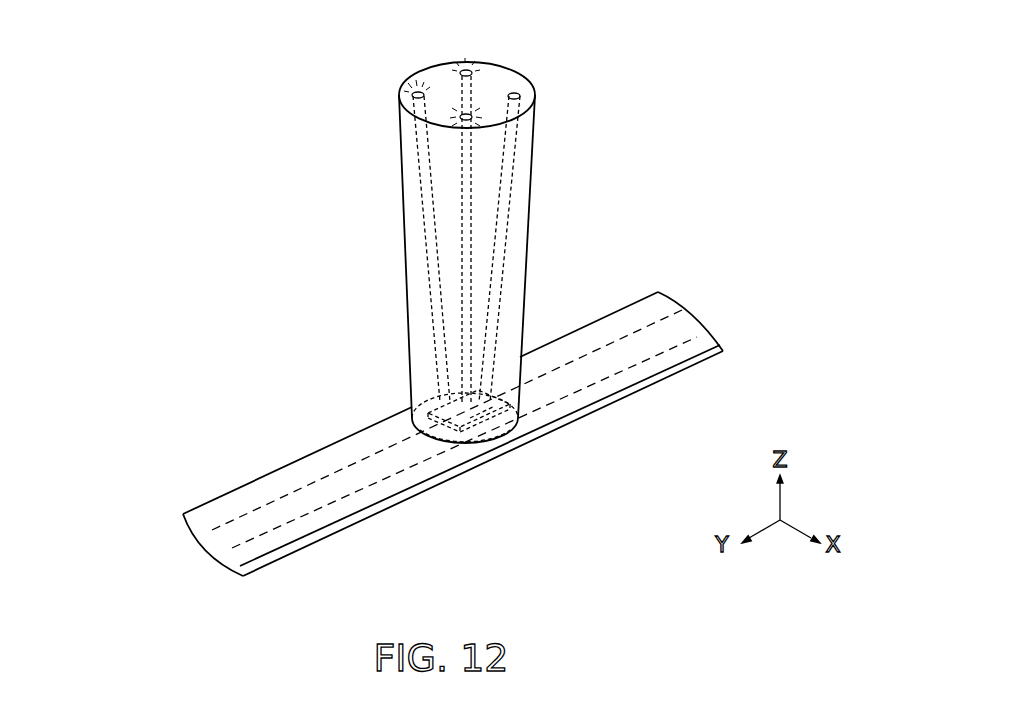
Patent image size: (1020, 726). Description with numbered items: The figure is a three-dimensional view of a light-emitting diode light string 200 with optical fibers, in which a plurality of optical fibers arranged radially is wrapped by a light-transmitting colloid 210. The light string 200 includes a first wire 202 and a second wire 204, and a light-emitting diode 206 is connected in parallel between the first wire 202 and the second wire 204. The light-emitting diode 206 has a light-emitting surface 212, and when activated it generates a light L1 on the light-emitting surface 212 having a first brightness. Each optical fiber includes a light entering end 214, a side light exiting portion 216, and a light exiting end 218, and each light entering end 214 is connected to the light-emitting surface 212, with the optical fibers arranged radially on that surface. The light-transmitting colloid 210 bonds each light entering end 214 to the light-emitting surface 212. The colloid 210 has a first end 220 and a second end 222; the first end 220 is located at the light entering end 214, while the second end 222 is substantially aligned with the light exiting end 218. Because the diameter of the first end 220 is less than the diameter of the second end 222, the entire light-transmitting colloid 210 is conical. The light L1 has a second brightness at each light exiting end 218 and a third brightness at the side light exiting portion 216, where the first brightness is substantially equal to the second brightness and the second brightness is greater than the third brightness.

The light-emitting diode light string 200 is at (69, 90).
The first wire 202 is at (268, 502).
The second wire 204 is at (284, 520).
The light-emitting diode 206 is at (448, 425).
The light-transmitting colloid 210 is at (408, 258).
The light-emitting surface 212 is at (437, 389).
The light entering end 214 is at (481, 428).
The side light exiting portion 216 is at (510, 243).
The light exiting end 218 is at (517, 90).
The first end 220 is at (396, 99).
The second end 222 is at (405, 418).
The light L1 is at (413, 78).